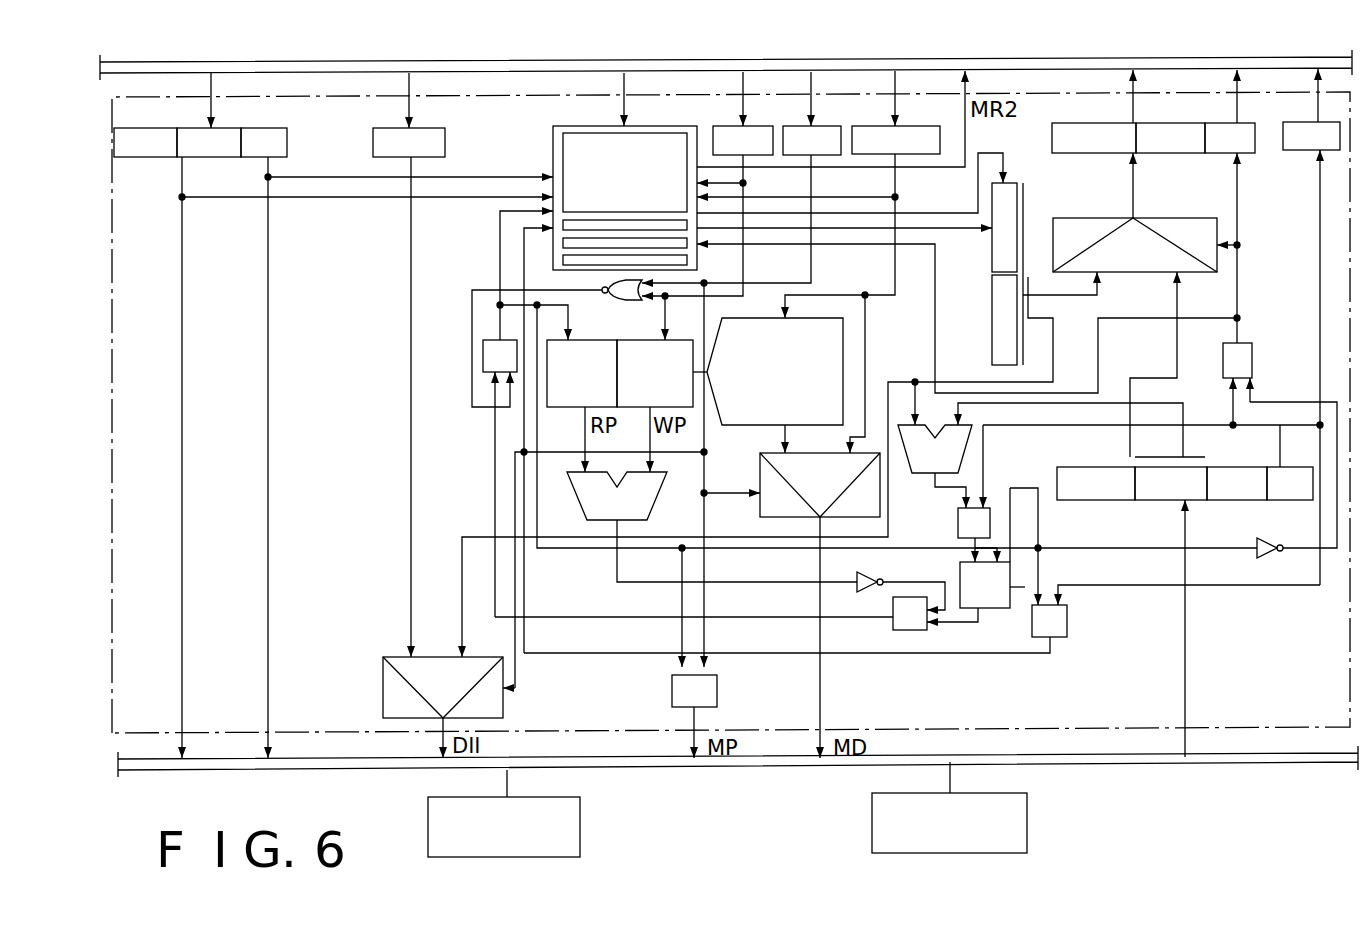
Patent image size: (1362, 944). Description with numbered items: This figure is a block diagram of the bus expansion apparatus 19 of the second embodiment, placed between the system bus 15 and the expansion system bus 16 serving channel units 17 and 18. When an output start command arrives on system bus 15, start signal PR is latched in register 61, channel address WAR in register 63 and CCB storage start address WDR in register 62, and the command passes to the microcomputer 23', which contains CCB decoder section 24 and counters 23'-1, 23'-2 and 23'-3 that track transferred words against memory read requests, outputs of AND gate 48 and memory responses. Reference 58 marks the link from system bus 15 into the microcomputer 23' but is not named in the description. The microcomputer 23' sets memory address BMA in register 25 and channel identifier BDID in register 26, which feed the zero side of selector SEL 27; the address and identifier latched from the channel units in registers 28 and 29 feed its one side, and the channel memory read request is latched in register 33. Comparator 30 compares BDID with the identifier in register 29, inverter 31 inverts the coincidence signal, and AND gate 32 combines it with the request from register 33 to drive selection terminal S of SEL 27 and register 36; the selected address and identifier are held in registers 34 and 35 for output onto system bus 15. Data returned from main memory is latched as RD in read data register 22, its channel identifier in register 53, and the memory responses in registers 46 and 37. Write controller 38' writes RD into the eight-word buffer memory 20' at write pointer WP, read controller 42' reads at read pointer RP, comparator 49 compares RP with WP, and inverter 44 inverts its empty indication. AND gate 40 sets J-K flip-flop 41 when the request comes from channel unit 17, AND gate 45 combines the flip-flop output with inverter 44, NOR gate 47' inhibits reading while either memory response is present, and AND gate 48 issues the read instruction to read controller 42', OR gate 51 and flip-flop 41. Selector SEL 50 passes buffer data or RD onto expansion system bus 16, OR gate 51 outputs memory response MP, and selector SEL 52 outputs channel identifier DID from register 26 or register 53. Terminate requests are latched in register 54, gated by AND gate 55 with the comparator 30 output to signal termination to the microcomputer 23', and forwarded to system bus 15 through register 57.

The system bus 15 is at (1046, 71).
The expansion system bus 16 is at (1157, 763).
The channel unit III 17 is at (580, 826).
The channel unit IV 18 is at (1027, 823).
The bus expansion apparatus 19 is at (1053, 728).
The buffer memory 20' is at (768, 390).
The read data register 22 is at (910, 126).
The microcomputer COM 23' is at (594, 184).
The counter 23'-1 is at (562, 217).
The counter 23'-2 is at (562, 242).
The counter 23'-3 is at (562, 268).
The CCB decoder section 24 is at (666, 127).
The register 25 is at (992, 252).
The register 26 is at (992, 338).
The selector SEL 27 is at (1100, 218).
The register 28 is at (1068, 500).
The register 29 is at (1146, 500).
The comparator 30 is at (912, 473).
The inverter 31 is at (1270, 558).
The AND gate 32 is at (1252, 360).
The register 33 is at (1233, 500).
The register 34 is at (1062, 153).
The register 35 is at (1150, 153).
The register 36 is at (1255, 148).
The register 37 is at (750, 126).
The write controller 38' is at (655, 351).
The AND gate 40 is at (990, 523).
The J-K flip-flop 41 is at (990, 608).
The read controller 42' is at (582, 392).
The inverter 44 is at (870, 572).
The AND gate 45 is at (893, 625).
The register 46 is at (818, 126).
The NOR gate 47' is at (612, 303).
The AND gate 48 is at (483, 358).
The comparator 49 is at (654, 505).
The selector SEL 50 is at (760, 497).
The OR gate 51 is at (717, 693).
The selector SEL 52 is at (383, 697).
The register 53 is at (371, 136).
The register 54 is at (1296, 500).
The AND gate 55 is at (1067, 622).
The register 57 is at (1300, 150).
The bus signal line 58 is at (644, 98).
The register 61 is at (287, 148).
The register 62 is at (222, 157).
The register 63 is at (143, 157).